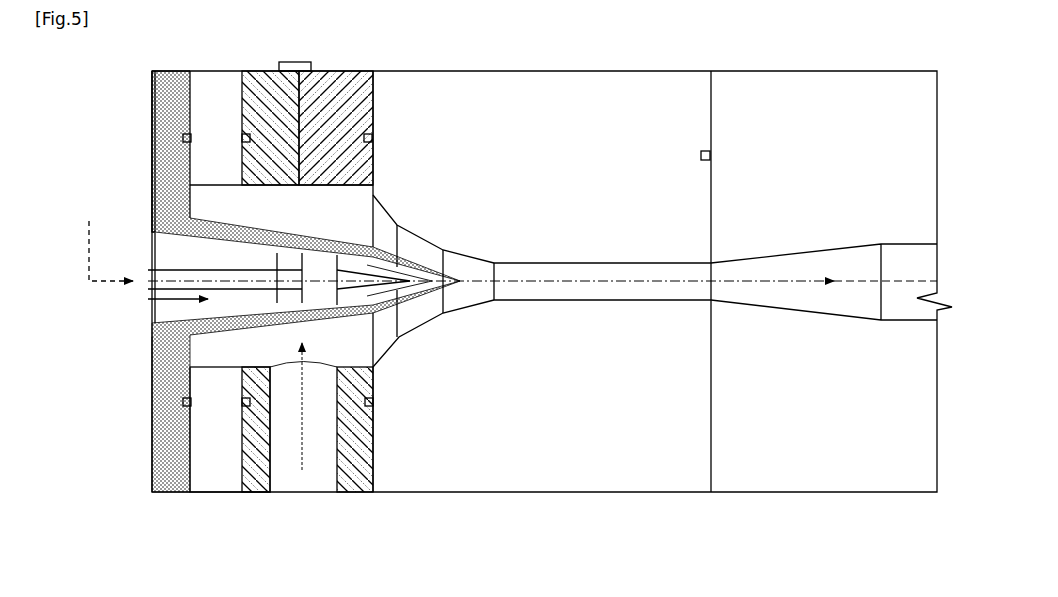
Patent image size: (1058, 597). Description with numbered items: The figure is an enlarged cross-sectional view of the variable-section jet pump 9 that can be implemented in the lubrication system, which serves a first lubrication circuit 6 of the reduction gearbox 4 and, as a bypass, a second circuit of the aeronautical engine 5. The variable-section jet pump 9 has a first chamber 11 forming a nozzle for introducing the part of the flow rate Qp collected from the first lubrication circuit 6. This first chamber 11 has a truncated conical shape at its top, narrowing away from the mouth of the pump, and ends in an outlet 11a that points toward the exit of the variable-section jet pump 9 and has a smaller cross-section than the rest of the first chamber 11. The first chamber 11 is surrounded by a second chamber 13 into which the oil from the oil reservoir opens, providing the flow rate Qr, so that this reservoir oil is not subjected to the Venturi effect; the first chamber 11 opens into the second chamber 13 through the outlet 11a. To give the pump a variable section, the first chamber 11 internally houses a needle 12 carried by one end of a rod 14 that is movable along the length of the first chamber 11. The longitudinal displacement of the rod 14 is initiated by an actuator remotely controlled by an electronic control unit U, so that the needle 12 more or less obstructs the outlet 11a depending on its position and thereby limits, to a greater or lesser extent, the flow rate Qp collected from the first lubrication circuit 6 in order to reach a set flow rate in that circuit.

The variable-section jet pump 9 is at (871, 497).
The first chamber 11 is at (243, 297).
The outlet 11a is at (407, 265).
The needle 12 is at (380, 276).
The second chamber 13 is at (347, 332).
The rod 14 is at (212, 273).
The reduction gearbox 4 is at (307, 281).
The aeronautical engine 5 is at (226, 313).
The first lubrication circuit 6 is at (542, 358).
The collected flow rate Qp is at (185, 305).
The flow rate coming from the oil reservoir Qr is at (290, 372).
The electronic control unit U is at (100, 228).